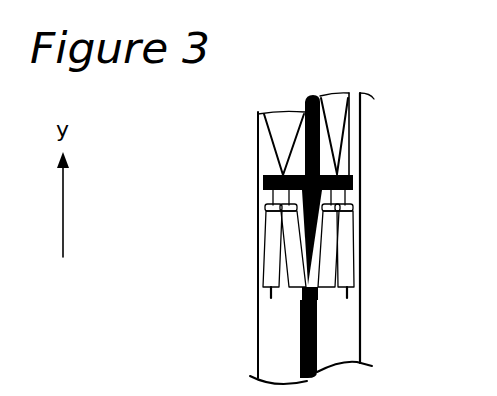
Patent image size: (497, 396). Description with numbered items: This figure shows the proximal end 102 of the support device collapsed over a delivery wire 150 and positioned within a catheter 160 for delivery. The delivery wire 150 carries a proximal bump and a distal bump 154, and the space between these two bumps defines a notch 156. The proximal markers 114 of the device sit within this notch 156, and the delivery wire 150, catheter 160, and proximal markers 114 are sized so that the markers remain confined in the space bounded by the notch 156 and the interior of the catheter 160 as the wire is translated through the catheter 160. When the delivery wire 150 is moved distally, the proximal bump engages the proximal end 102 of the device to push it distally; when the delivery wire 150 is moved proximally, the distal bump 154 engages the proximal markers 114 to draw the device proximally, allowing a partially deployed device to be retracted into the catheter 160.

The proximal end 102 is at (357, 301).
The proximal markers 114 is at (272, 243).
The delivery wire 150 is at (323, 140).
The distal bump 154 is at (358, 180).
The notch 156 is at (245, 195).
The catheter 160 is at (256, 137).